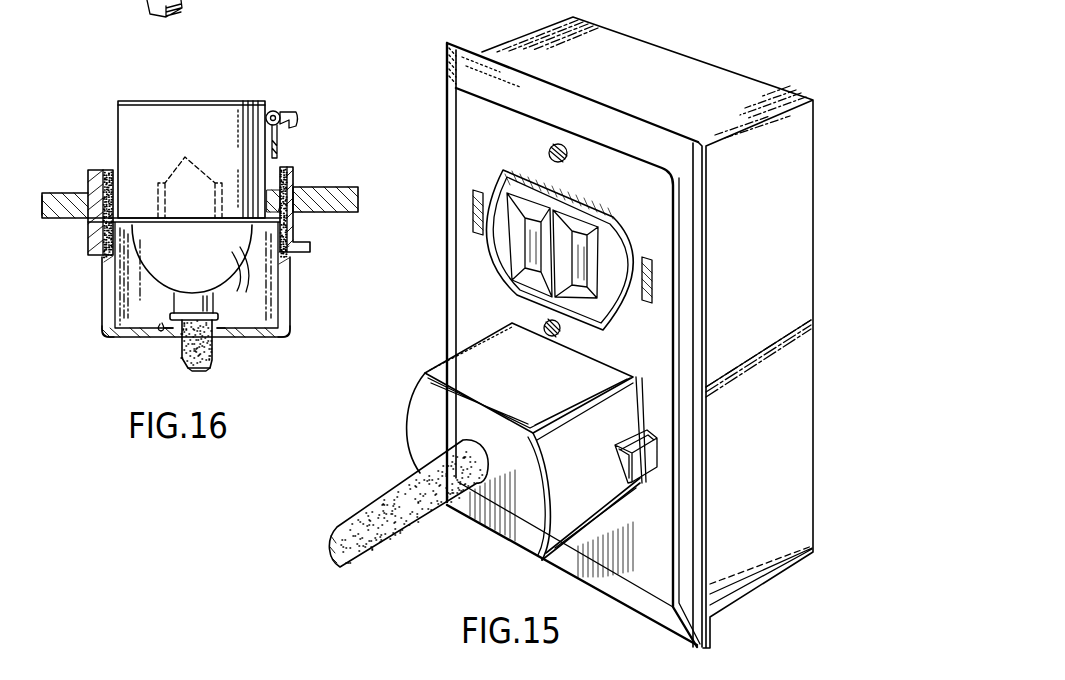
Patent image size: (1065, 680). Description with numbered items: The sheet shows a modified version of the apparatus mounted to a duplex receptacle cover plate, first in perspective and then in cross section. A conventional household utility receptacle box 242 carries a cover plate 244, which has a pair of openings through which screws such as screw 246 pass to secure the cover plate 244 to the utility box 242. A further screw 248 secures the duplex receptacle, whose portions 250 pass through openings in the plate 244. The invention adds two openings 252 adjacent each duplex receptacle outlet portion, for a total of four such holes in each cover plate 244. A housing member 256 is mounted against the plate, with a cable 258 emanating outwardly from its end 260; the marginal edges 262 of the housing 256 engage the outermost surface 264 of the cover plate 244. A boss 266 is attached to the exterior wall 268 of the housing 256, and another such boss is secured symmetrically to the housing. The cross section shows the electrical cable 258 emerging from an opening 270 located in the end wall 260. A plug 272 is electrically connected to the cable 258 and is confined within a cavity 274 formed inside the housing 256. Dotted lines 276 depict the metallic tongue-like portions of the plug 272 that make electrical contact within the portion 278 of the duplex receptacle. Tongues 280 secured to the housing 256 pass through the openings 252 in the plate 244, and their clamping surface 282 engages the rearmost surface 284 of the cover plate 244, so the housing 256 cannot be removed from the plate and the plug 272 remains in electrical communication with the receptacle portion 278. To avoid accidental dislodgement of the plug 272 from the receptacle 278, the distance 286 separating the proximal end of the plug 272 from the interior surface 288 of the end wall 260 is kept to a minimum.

In FIG. 15, the household utility receptacle box 242 is at (752, 88).
In FIG. 15, the cover plate 244 is at (470, 47).
In FIG. 16, the cover plate 244 is at (357, 188).
In FIG. 15, the screw 246 is at (562, 163).
In FIG. 15, the screw 248 is at (562, 336).
In FIG. 15, the portions of duplex receptacle 250 is at (622, 222).
In FIG. 15, the openings 252 is at (478, 189).
In FIG. 16, the openings 252 is at (95, 241).
In FIG. 15, the housing member 256 is at (513, 531).
In FIG. 16, the housing member 256 is at (103, 340).
In FIG. 15, the cable 258 is at (419, 514).
In FIG. 16, the cable 258 is at (212, 352).
In FIG. 15, the end wall 260 is at (422, 418).
In FIG. 16, the end wall 260 is at (250, 338).
In FIG. 15, the marginal edges 262 is at (617, 367).
In FIG. 15, the outermost surface 264 is at (500, 131).
In FIG. 15, the boss 266 is at (650, 460).
In FIG. 15, the exterior wall 268 is at (608, 495).
In FIG. 16, the opening 270 is at (190, 367).
In FIG. 16, the plug 272 is at (174, 262).
In FIG. 16, the cavity 274 is at (257, 277).
In FIG. 16, the dotted lines 276 is at (190, 175).
In FIG. 16, the portion of duplex receptacle 278 is at (190, 112).
In FIG. 16, the tongues 280 is at (105, 170).
In FIG. 16, the clamping surface 282 is at (69, 221).
In FIG. 16, the rearmost surface 284 is at (75, 193).
In FIG. 16, the distance 286 is at (219, 318).
In FIG. 16, the interior surface 288 is at (162, 331).